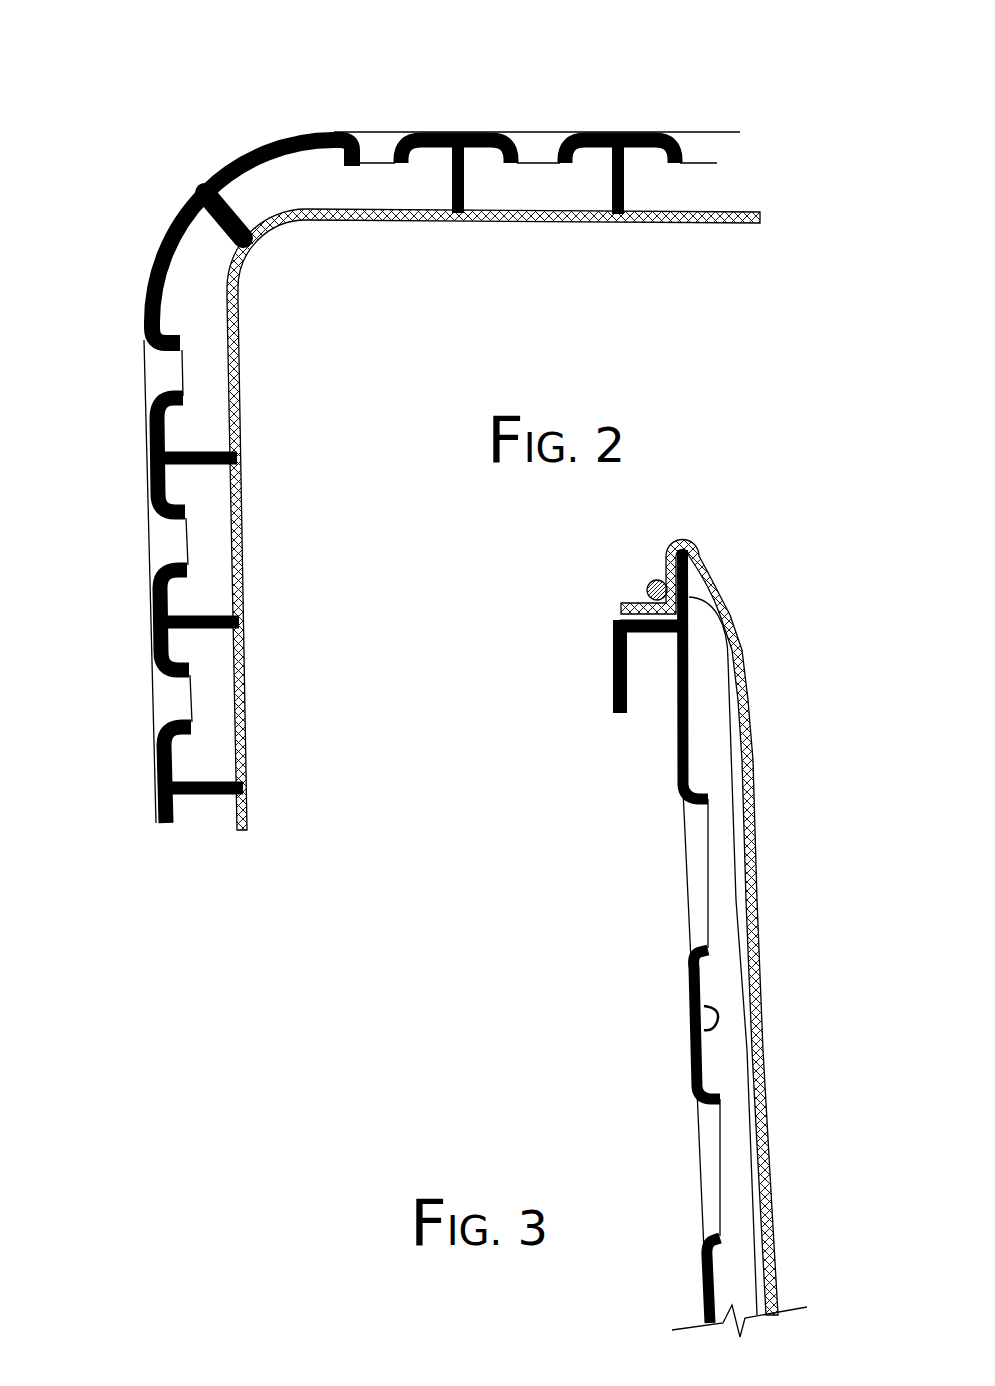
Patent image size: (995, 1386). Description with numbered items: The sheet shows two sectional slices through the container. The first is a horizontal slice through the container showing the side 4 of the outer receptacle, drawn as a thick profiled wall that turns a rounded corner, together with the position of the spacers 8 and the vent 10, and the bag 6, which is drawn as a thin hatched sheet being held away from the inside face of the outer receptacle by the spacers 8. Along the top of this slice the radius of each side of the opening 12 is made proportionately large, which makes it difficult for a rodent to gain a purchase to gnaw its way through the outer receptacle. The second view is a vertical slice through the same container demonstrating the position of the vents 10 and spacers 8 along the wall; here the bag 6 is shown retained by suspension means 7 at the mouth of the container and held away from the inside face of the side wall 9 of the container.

In FIG. 2, the side of the outer receptacle 4 is at (204, 190).
In FIG. 2, the bag 6 is at (342, 212).
In FIG. 3, the bag 6 is at (745, 697).
In FIG. 3, the suspension means 7 is at (648, 590).
In FIG. 2, the spacers 8 is at (198, 449).
In FIG. 3, the spacers 8 is at (737, 1177).
In FIG. 3, the side wall 9 is at (700, 1037).
In FIG. 2, the vent 10 is at (152, 369).
In FIG. 3, the vent 10 is at (702, 878).
In FIG. 2, the opening 12 is at (557, 137).